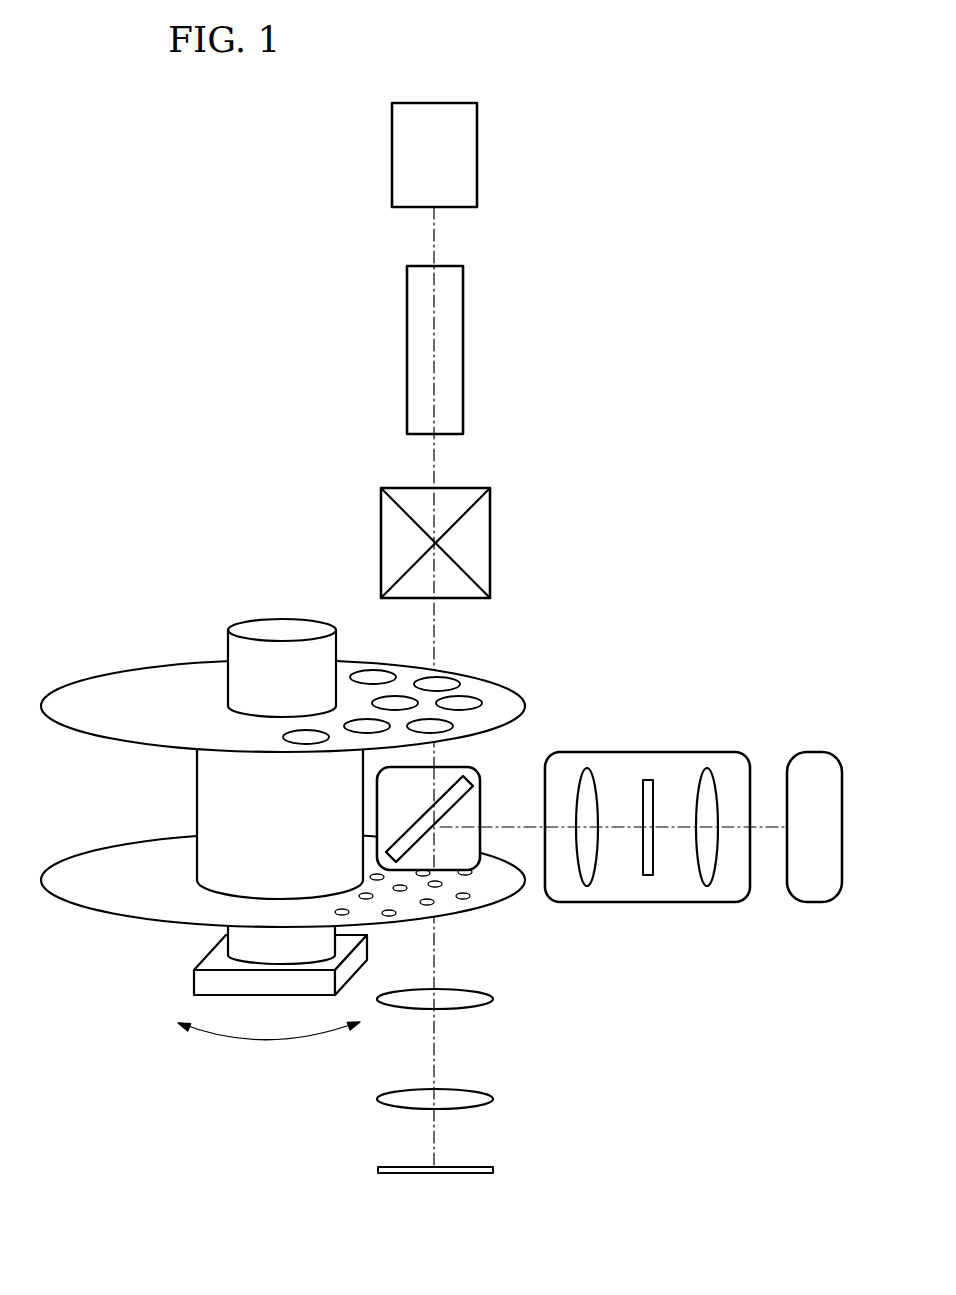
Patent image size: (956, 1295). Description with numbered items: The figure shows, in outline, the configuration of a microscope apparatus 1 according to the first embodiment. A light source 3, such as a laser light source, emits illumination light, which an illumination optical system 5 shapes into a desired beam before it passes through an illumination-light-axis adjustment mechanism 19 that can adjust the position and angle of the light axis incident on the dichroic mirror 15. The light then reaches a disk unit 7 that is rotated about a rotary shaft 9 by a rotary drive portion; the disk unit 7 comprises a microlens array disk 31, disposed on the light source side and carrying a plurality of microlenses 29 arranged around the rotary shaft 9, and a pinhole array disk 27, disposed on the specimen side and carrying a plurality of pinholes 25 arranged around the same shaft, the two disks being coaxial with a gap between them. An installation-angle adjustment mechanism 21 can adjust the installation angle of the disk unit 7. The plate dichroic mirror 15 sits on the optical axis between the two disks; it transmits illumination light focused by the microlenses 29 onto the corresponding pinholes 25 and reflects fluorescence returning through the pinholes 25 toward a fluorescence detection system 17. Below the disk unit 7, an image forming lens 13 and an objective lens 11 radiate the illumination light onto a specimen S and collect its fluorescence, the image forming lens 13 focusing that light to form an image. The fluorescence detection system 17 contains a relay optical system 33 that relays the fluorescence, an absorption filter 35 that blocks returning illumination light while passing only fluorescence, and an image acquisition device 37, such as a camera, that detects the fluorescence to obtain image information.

The microscope apparatus 1 is at (731, 183).
The light source 3 is at (477, 140).
The illumination optical system 5 is at (463, 335).
The disk unit 7 is at (309, 796).
The rotary shaft 9 is at (276, 627).
The objective lens 11 is at (493, 1100).
The image forming lens 13 is at (493, 1000).
The dichroic mirror 15 is at (480, 800).
The fluorescence detection system 17 is at (661, 788).
The illumination-light-axis adjustment mechanism 19 is at (490, 541).
The installation-angle adjustment mechanism 21 is at (194, 977).
The pinholes 25 is at (402, 889).
The pinhole array disk 27 is at (299, 869).
The microlenses 29 is at (372, 676).
The microlens array disk 31 is at (113, 688).
The relay optical system 33 is at (573, 752).
The absorption filter 35 is at (648, 877).
The image acquisition device 37 is at (808, 905).
The specimen S is at (493, 1170).